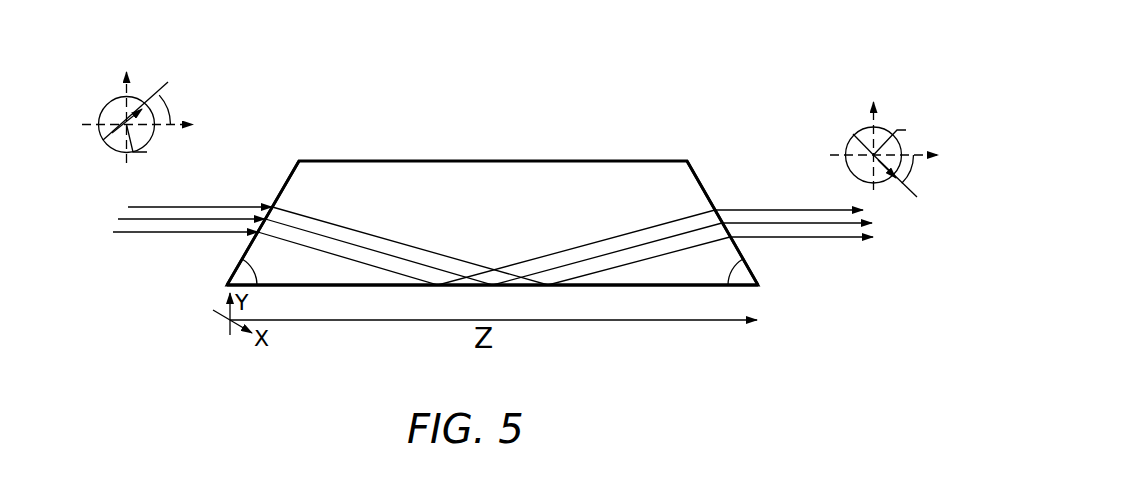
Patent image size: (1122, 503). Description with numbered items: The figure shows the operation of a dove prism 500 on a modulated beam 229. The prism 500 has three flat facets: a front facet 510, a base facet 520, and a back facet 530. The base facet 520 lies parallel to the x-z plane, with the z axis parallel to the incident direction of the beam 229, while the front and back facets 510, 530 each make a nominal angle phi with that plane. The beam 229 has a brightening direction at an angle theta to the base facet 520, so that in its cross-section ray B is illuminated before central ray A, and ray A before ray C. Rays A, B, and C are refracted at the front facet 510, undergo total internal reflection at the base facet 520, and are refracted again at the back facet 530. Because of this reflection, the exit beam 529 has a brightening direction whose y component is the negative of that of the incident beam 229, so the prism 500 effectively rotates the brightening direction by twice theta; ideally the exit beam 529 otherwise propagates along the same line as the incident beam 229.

The dove prism 500 is at (492, 178).
The front facet 510 is at (258, 213).
The back facet 530 is at (733, 218).
The base facet 520 is at (537, 306).
The modulated beam 229 is at (177, 171).
The exit beam 529 is at (836, 167).